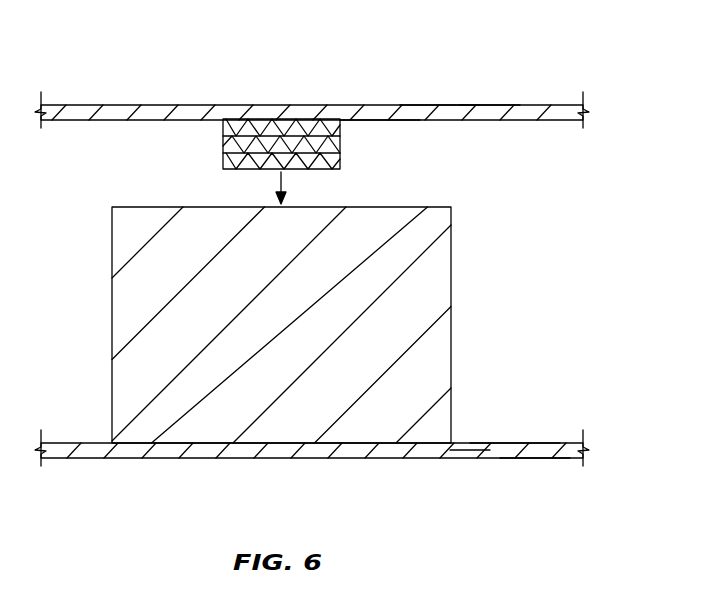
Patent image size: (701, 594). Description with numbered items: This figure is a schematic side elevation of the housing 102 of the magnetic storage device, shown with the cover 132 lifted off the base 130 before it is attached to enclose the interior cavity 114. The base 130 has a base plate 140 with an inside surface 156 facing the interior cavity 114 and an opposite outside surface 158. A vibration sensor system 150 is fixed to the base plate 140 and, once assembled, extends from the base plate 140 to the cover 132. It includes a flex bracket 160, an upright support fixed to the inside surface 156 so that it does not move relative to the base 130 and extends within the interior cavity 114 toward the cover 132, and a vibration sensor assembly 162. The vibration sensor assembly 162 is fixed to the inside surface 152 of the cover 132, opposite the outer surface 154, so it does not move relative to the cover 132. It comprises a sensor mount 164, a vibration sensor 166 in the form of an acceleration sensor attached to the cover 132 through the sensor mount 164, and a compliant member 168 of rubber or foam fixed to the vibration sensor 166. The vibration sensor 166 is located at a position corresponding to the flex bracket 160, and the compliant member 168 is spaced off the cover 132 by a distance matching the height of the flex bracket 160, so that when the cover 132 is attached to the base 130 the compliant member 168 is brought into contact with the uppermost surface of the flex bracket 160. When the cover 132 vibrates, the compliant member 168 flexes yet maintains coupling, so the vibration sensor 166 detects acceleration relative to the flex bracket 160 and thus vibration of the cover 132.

The display assembly 102 is at (496, 62).
The interior cavity 114 is at (93, 380).
The base 130 is at (177, 470).
The cover 132 is at (525, 117).
The base plate 140 is at (467, 452).
The vibration sensor system 150 is at (351, 325).
The inside surface of the cover 152 is at (385, 121).
The upper surface of second plate 154 is at (425, 120).
The inside surface of the base plate 156 is at (510, 443).
The outside surface of the base plate 158 is at (542, 458).
The flex bracket 160 is at (433, 328).
The vibration sensor assembly 162 is at (262, 102).
The sensor mount 164 is at (240, 127).
The vibration sensor 166 is at (297, 142).
The compliant member 168 is at (222, 160).